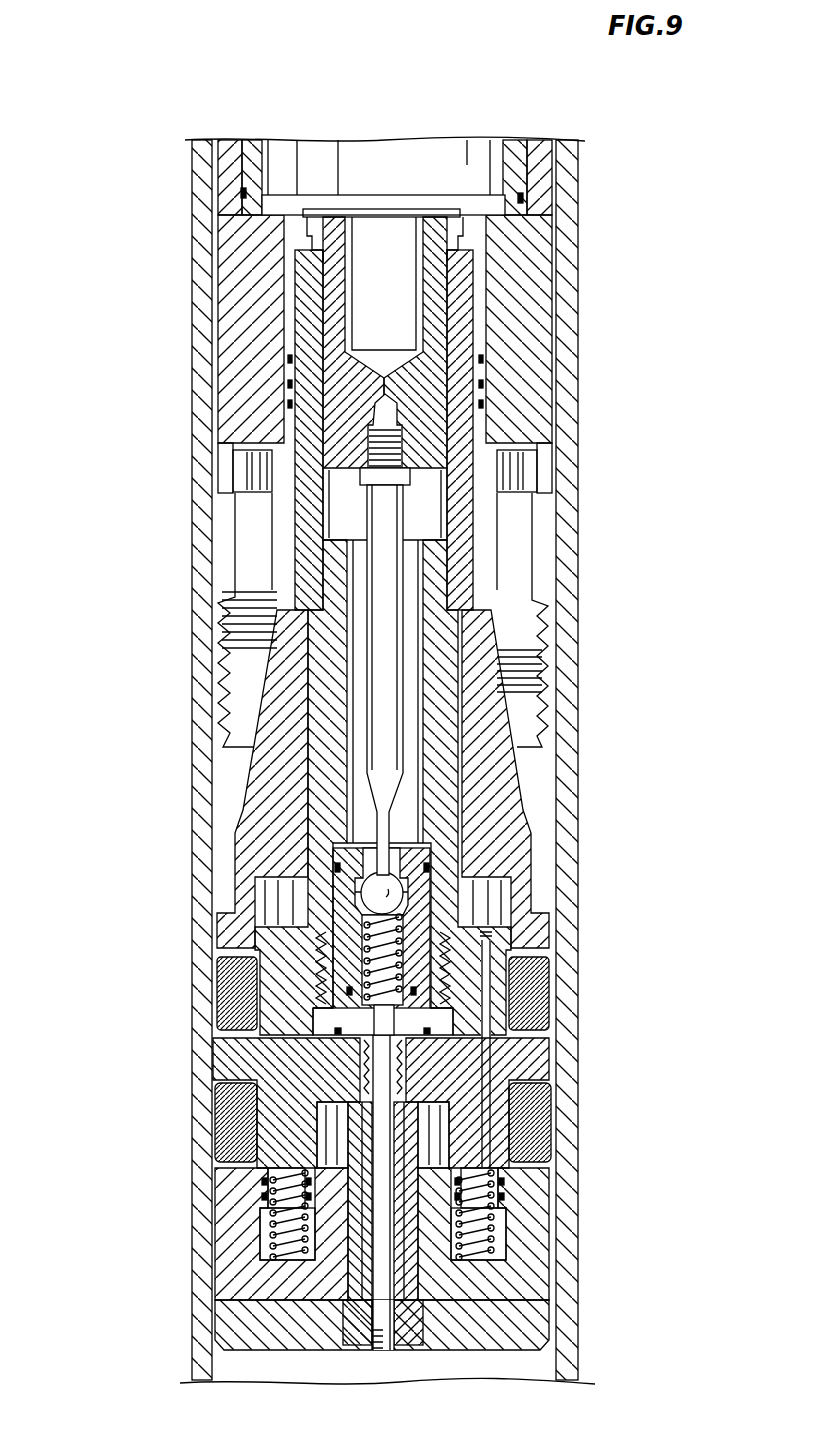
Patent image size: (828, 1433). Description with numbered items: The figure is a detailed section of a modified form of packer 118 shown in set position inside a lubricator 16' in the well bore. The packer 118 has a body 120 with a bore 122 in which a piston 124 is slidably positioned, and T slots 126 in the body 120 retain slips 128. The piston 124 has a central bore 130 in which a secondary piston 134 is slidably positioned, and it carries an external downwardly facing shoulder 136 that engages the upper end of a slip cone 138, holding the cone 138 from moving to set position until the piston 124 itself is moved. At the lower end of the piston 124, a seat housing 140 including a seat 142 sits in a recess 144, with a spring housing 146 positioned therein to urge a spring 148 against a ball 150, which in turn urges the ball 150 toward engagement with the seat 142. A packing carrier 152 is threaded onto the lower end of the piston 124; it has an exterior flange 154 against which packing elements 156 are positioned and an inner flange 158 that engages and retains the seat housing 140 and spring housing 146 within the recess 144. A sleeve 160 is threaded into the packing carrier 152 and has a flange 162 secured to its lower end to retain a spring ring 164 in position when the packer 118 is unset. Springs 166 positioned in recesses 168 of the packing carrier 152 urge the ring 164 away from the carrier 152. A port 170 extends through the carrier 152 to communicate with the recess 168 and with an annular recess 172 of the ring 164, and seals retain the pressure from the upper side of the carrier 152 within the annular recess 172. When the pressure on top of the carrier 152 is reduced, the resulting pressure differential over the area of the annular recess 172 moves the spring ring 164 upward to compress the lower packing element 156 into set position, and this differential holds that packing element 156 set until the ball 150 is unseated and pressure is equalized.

The lubricator 16' is at (421, 760).
The packer 118 is at (592, 682).
The body 120 is at (530, 292).
The bore 122 is at (455, 272).
The piston 124 is at (472, 338).
The T slots 126 is at (537, 455).
The slips 128 is at (540, 614).
The central bore 130 is at (284, 307).
The secondary piston 134 is at (428, 275).
The downwardly facing shoulder 136 is at (300, 243).
The slip cone 138 is at (527, 792).
The seat housing 140 is at (338, 880).
The seat 142 is at (336, 850).
The recess 144 is at (333, 913).
The spring housing 146 is at (362, 1006).
The spring 148 is at (405, 912).
The ball 150 is at (405, 880).
The packing carrier 152 is at (548, 968).
The exterior flange 154 is at (549, 1068).
The packing elements 156 is at (549, 996).
The inner flange 158 is at (447, 1112).
The sleeve 160 is at (418, 1280).
The flange 162 is at (549, 1333).
The spring ring 164 is at (549, 1243).
The springs 166 is at (500, 1258).
The recesses 168 is at (499, 1203).
The port 170 is at (491, 1058).
The annular recess 172 is at (262, 1250).